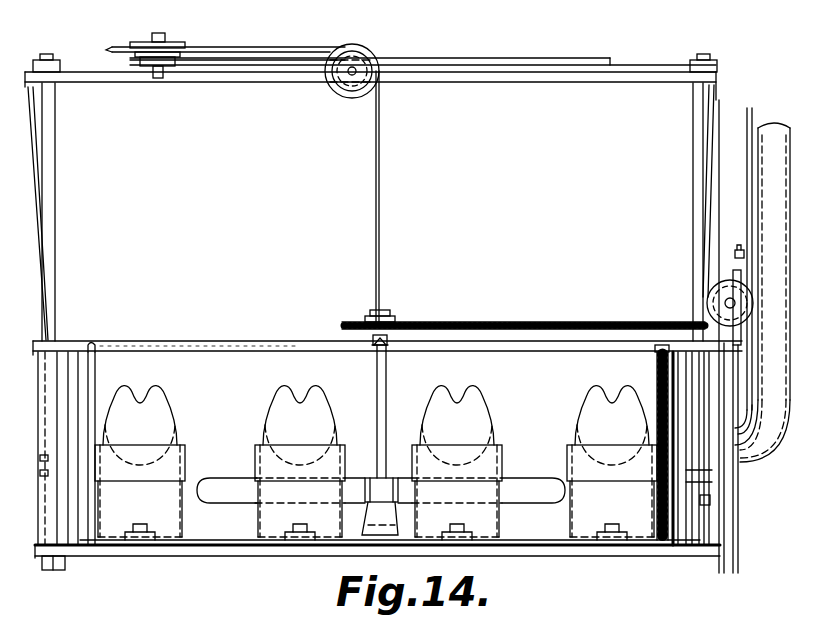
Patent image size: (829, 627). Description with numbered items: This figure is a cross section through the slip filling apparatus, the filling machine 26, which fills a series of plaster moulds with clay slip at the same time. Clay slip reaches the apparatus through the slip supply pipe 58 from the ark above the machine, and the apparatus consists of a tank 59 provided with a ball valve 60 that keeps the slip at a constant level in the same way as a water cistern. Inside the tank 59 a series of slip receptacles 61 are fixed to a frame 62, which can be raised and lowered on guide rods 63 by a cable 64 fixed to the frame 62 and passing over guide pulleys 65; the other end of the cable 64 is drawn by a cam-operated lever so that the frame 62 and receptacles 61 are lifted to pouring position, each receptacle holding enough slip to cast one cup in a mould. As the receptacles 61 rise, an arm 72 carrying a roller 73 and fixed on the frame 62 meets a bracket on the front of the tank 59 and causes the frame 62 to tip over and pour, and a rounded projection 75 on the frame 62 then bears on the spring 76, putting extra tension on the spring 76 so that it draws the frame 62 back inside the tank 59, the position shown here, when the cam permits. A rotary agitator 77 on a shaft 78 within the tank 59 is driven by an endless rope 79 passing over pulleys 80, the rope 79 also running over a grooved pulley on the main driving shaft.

The filling machine 26 is at (207, 326).
The slip supply pipe 58 is at (772, 130).
The tank 59 is at (376, 449).
The ball valve 60 is at (700, 476).
The slip receptacles 61 is at (155, 410).
The frame 62 is at (248, 338).
The guide rods 63 is at (58, 198).
The cable 64 is at (122, 50).
The guide pulleys 65 is at (180, 46).
The arm 72 is at (394, 508).
The roller 73 is at (368, 480).
The rounded projection 75 is at (690, 518).
The spring 76 is at (656, 368).
The rotary agitator 77 is at (213, 488).
The shaft 78 is at (387, 404).
The endless rope 79 is at (531, 324).
The pulleys 80 is at (404, 320).